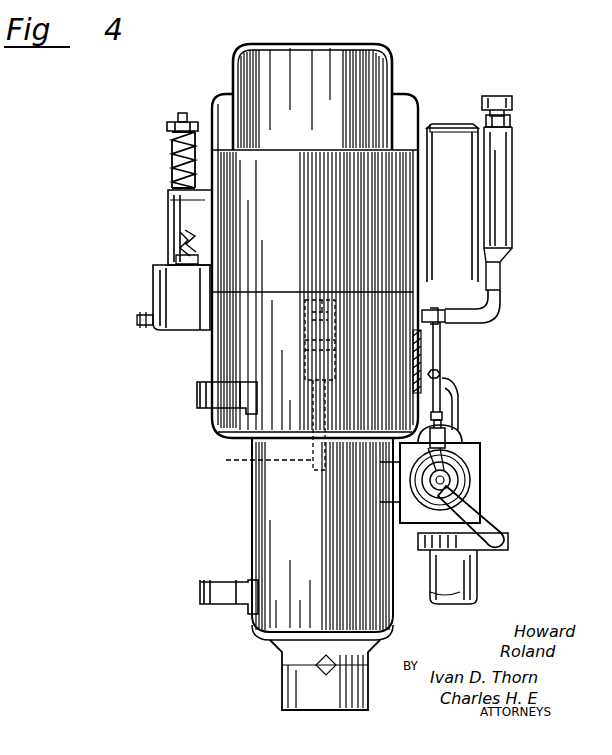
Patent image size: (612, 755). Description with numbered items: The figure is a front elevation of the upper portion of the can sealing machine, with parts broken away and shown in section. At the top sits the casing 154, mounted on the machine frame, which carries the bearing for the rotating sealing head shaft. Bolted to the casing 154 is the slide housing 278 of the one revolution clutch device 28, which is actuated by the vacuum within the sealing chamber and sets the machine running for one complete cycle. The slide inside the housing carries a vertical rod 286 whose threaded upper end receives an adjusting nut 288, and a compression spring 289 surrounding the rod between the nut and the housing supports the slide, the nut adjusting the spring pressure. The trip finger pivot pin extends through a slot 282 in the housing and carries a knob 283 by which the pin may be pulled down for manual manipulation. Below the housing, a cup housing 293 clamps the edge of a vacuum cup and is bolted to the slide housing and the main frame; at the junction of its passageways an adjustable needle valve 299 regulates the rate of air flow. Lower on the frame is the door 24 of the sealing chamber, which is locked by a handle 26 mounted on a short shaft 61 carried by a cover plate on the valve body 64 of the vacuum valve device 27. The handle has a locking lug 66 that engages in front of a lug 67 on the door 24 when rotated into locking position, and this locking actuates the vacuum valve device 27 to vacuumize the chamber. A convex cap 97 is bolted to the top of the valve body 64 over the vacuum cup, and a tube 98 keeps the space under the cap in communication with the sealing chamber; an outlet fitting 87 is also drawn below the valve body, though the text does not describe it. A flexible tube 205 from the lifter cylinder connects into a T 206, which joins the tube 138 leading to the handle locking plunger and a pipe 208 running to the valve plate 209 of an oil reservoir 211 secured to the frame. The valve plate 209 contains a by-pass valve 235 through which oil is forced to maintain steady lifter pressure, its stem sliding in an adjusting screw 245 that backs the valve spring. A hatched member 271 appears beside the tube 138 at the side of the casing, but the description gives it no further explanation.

The door 24 is at (265, 487).
The handle 26 is at (506, 528).
The vacuum valve device 27 is at (494, 484).
The one revolution clutch device 28 is at (160, 218).
The short shaft 61 is at (458, 468).
The valve body 64 is at (470, 498).
The locking lug 66 is at (462, 440).
The lug 67 is at (398, 480).
The outlet 87 is at (468, 578).
The convex cap 97 is at (442, 437).
The tube 98 is at (456, 394).
The tube 138 is at (438, 366).
The casing 154 is at (312, 119).
The flexible tube 205 is at (262, 387).
The T 206 is at (440, 302).
The pipe 208 is at (502, 293).
The valve plate 209 is at (500, 192).
The oil reservoir 211 is at (452, 203).
The by-pass valve 235 is at (524, 137).
The adjusting screw 245 is at (514, 102).
The hatched member 271 is at (415, 352).
The slide housing 278 is at (187, 200).
The slot 282 is at (176, 240).
The knob 283 is at (170, 262).
The vertical rod 286 is at (180, 115).
The adjusting nut 288 is at (170, 123).
The compression spring 289 is at (172, 143).
The cup housing 293 is at (175, 287).
The adjustable needle valve 299 is at (145, 326).